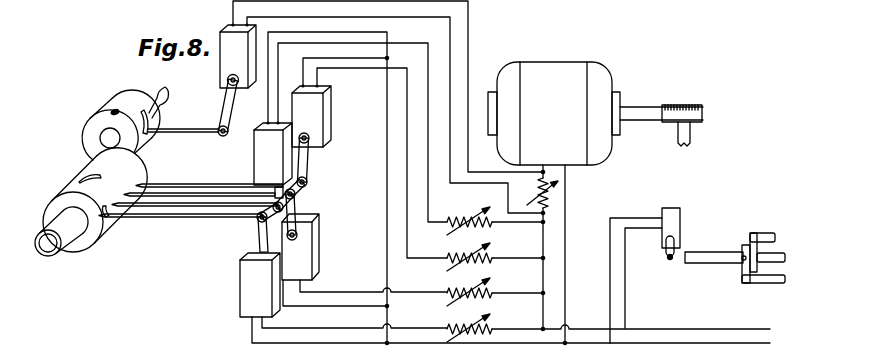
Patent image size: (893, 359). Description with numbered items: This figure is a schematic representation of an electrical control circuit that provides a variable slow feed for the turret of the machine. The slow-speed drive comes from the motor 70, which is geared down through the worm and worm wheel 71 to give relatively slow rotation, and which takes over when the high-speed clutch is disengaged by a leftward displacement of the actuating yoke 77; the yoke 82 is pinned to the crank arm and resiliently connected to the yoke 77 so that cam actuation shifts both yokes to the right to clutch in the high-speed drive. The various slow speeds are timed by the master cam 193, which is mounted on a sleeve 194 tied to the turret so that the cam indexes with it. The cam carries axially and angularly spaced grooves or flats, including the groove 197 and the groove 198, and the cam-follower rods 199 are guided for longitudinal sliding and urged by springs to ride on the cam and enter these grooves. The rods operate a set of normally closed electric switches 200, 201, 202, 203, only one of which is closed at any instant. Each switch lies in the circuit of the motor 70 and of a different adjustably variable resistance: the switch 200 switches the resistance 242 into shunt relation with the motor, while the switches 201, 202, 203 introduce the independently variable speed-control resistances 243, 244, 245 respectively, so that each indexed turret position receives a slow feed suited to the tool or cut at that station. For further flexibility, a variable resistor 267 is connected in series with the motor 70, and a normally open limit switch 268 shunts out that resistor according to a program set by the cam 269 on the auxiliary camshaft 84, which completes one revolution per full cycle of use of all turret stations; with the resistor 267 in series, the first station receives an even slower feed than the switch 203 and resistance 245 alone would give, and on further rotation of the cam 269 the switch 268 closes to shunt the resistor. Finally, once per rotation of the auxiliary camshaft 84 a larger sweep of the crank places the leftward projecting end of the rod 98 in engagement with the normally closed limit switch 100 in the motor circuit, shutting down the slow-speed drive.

The auxiliary camshaft 84 is at (159, 87).
The normally open limit switch 268 is at (226, 62).
The cam 269 is at (98, 130).
The groove 197 is at (88, 176).
The master cam 193 is at (54, 208).
The sleeve 194 is at (67, 233).
The groove 198 is at (108, 222).
The cam-follower rods 199 is at (212, 185).
The electric switch 202 is at (256, 148).
The electric switch 200 is at (327, 120).
The electric switch 201 is at (318, 240).
The electric switch 203 is at (240, 290).
The slow-speed motor 70 is at (553, 67).
The worm and worm wheel 71 is at (697, 101).
The variable resistor 267 is at (552, 196).
The speed-control resistance 244 is at (458, 215).
The resistance 242 is at (453, 253).
The speed-control resistance 243 is at (494, 289).
The speed-control resistance 245 is at (456, 322).
The limit switch 100 is at (677, 218).
The rod 98 is at (713, 255).
The yoke 82 is at (762, 233).
The actuating yoke 77 is at (743, 277).